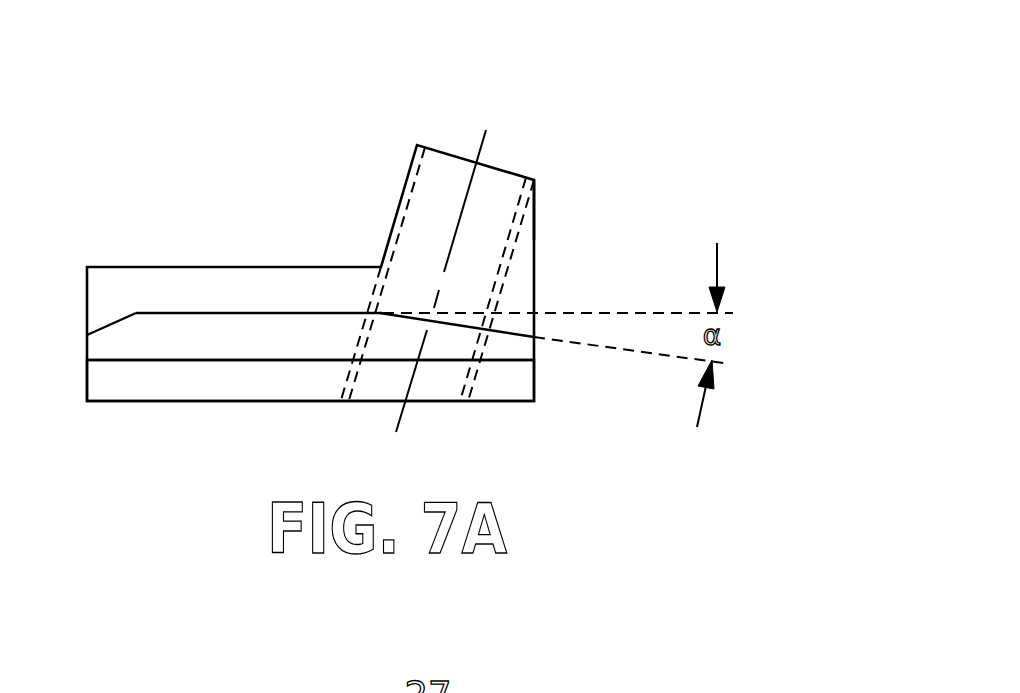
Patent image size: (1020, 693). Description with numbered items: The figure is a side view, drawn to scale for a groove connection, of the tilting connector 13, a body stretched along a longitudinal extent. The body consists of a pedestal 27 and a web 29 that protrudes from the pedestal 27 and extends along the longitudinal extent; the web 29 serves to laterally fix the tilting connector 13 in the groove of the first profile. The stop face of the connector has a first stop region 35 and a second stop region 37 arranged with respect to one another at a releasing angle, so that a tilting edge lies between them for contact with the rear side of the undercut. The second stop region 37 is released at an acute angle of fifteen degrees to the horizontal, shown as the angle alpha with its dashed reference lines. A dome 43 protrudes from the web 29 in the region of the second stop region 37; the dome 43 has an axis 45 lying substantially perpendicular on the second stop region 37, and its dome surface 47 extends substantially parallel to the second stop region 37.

The tilting connector 13 is at (600, 120).
The pedestal 27 is at (502, 380).
The web 29 is at (127, 288).
The first stop region 35 is at (277, 312).
The second stop region 37 is at (503, 330).
The dome 43 is at (524, 240).
The axis 45 is at (478, 157).
The dome surface 47 is at (537, 202).